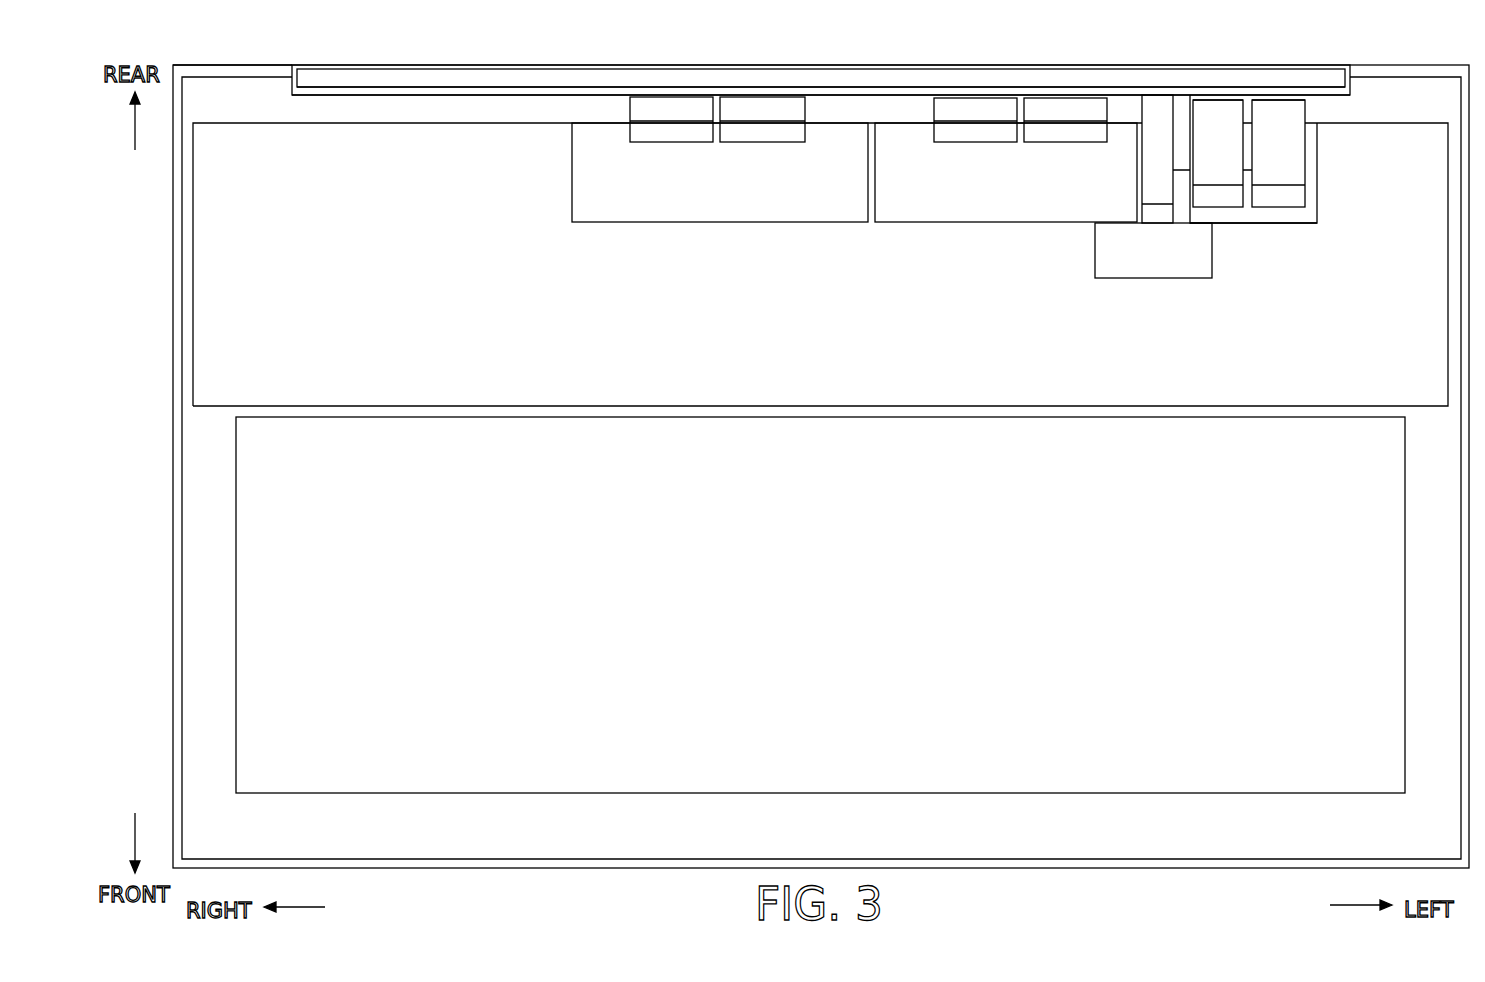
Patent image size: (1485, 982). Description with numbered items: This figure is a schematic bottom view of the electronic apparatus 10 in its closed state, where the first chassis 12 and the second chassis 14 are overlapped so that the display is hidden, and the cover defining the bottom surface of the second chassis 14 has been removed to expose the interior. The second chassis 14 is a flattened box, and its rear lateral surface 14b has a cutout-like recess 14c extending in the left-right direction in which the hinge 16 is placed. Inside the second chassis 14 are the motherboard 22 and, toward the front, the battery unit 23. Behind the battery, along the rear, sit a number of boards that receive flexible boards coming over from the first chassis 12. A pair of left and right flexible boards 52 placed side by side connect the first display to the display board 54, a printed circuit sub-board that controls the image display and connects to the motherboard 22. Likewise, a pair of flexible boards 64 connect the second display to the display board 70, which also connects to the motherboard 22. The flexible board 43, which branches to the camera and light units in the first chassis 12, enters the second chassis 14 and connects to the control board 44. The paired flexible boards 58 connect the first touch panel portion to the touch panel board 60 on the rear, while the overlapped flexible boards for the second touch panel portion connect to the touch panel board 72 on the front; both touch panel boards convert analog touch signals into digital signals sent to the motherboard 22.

The electronic apparatus 10 is at (180, 40).
The first chassis 12 is at (421, 62).
The second chassis 14 is at (168, 292).
The rear lateral surface 14b is at (230, 64).
The recess 14c is at (420, 97).
The hinge 16 is at (488, 76).
The motherboard 22 is at (342, 148).
The battery unit 23 is at (492, 762).
The flexible board 43 is at (1156, 105).
The control board 44 is at (1145, 265).
The flexible board 52 is at (735, 107).
The display board 54 is at (707, 200).
The flexible board 58 is at (1278, 107).
The touch panel board 60 is at (1313, 145).
The flexible board 64 is at (1045, 107).
The display board 70 is at (1010, 200).
The touch panel board 72 is at (1313, 195).